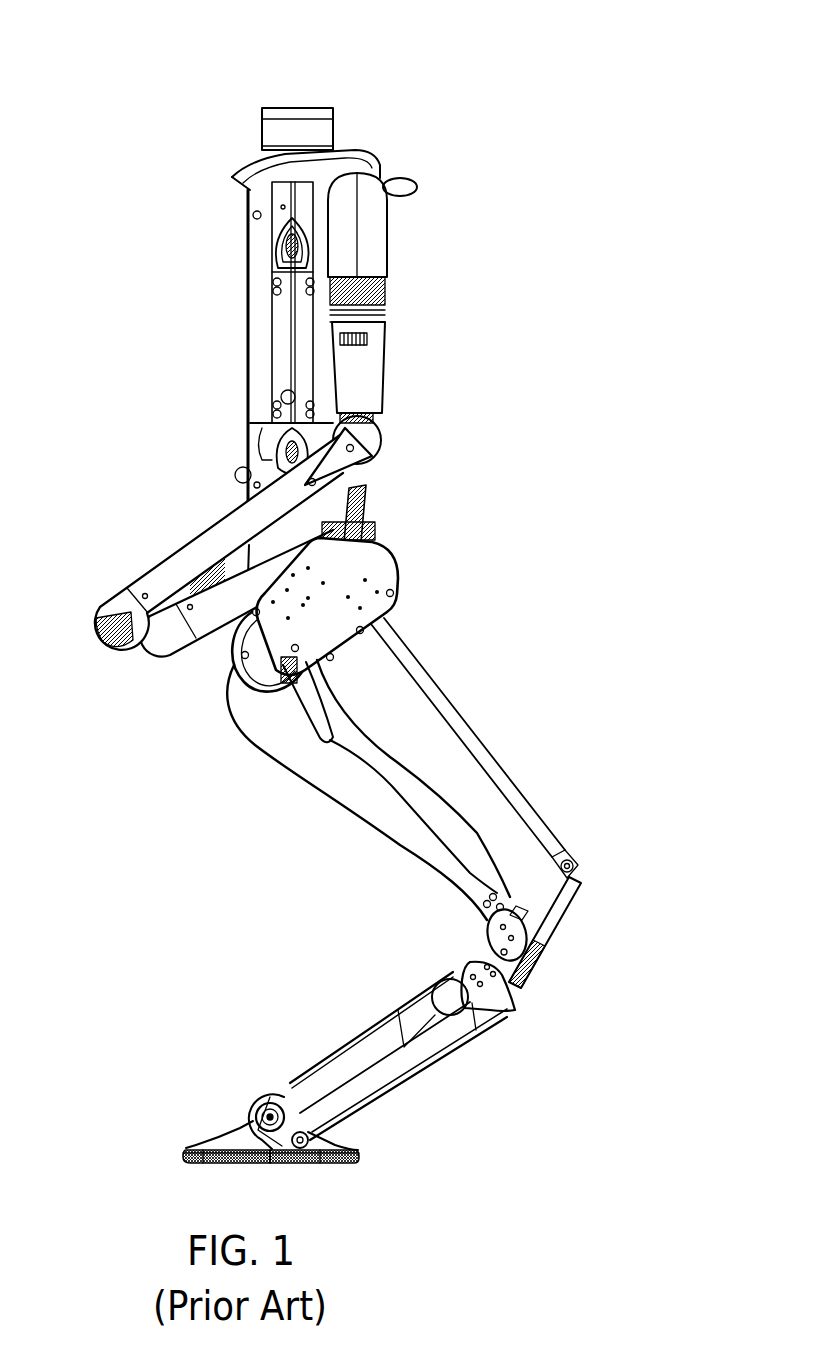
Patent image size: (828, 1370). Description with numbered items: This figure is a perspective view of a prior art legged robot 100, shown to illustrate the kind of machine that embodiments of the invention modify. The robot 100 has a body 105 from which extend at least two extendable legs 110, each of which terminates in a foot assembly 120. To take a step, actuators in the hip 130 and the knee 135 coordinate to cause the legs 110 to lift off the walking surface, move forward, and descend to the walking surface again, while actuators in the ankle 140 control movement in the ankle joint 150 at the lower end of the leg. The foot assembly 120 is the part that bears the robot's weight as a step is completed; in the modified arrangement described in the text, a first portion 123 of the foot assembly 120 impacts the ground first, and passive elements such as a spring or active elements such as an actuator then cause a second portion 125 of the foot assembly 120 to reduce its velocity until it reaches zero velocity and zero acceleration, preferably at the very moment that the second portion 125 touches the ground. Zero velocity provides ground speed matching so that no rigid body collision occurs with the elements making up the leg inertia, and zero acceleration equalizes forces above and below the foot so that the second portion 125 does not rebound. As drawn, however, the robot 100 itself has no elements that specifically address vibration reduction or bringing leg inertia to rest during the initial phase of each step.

The legged robot 100 is at (158, 61).
The body 105 is at (248, 336).
The extendable leg 110 is at (256, 747).
The foot assembly 120 is at (186, 1102).
The first portion 123 is at (353, 1153).
The second portion 125 is at (186, 1152).
The hip 130 is at (422, 546).
The knee 135 is at (212, 703).
The ankle 140 is at (582, 936).
The ankle joint 150 is at (271, 1105).